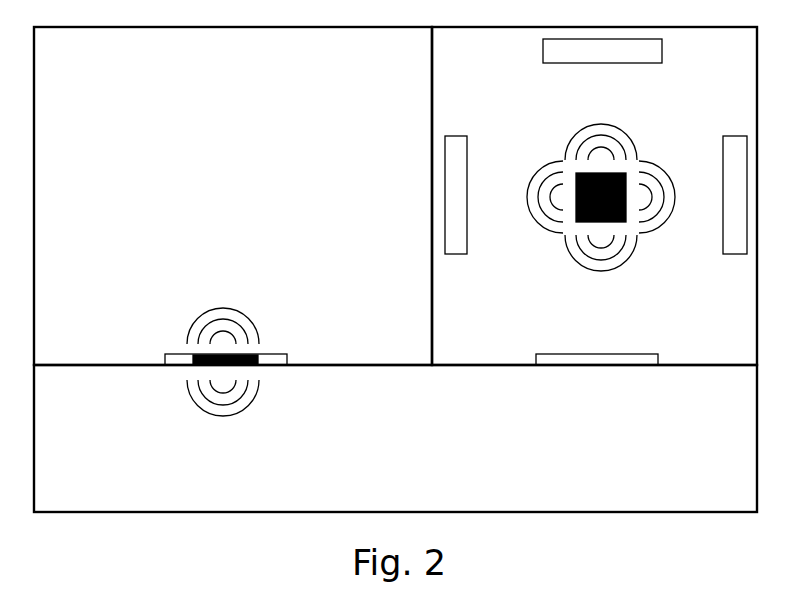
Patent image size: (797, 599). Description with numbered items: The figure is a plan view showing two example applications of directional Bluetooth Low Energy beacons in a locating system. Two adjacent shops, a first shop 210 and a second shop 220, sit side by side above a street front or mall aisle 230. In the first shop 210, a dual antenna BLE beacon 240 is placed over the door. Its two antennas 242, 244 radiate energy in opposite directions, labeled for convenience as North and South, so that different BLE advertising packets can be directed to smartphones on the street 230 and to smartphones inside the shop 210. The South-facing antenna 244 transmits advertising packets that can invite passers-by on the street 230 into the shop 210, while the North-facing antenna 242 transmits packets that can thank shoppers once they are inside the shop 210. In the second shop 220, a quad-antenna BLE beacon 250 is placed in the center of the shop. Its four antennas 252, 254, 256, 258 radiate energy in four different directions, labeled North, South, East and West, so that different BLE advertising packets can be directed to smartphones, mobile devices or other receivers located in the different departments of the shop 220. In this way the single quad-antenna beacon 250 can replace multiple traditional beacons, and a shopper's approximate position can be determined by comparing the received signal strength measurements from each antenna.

The Shop 1 210 is at (88, 66).
The Shop 2 220 is at (485, 66).
The street front or mall aisle 230 is at (403, 488).
The dual antenna BLE beacon 240 is at (177, 366).
The North-facing antenna 242 is at (221, 307).
The South-facing antenna 244 is at (228, 413).
The quad-antenna BLE beacon 250 is at (625, 180).
The antenna 252 is at (577, 137).
The antenna 254 is at (612, 270).
The antenna 256 is at (652, 232).
The antenna 258 is at (547, 230).